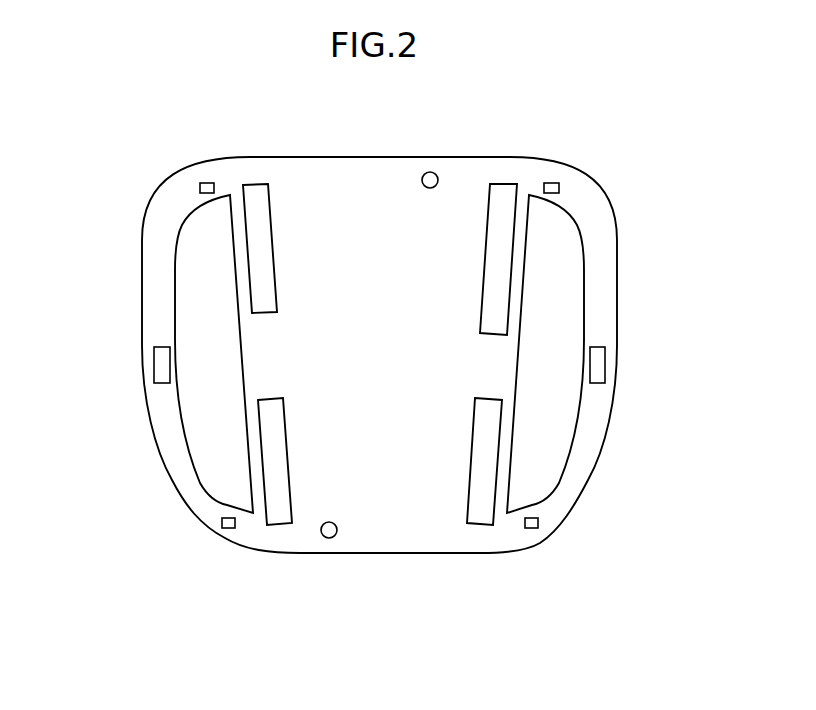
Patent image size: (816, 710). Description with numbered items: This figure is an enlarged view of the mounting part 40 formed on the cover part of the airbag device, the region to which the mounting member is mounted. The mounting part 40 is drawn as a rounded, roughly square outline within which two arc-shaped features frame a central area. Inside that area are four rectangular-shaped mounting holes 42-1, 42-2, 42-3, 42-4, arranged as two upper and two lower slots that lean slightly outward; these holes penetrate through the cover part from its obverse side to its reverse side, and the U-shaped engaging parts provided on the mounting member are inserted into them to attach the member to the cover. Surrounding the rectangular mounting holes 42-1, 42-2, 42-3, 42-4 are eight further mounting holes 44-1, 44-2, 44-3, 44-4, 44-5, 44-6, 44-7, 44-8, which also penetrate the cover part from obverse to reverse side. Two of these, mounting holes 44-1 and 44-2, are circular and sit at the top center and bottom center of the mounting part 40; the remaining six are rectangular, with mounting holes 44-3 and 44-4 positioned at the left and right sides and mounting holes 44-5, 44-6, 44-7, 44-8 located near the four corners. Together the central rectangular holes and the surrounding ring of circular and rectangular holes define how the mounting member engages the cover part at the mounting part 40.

The mounting part 40 is at (592, 175).
The mounting hole 42-1 is at (274, 260).
The mounting hole 42-2 is at (485, 261).
The mounting hole 42-3 is at (288, 435).
The mounting hole 42-4 is at (473, 436).
The mounting hole 44-1 is at (430, 172).
The mounting hole 44-2 is at (329, 538).
The mounting hole 44-3 is at (154, 352).
The mounting hole 44-4 is at (605, 353).
The mounting hole 44-5 is at (207, 183).
The mounting hole 44-6 is at (552, 183).
The mounting hole 44-7 is at (538, 521).
The mounting hole 44-8 is at (222, 521).